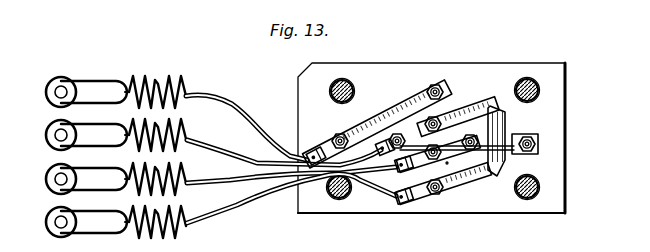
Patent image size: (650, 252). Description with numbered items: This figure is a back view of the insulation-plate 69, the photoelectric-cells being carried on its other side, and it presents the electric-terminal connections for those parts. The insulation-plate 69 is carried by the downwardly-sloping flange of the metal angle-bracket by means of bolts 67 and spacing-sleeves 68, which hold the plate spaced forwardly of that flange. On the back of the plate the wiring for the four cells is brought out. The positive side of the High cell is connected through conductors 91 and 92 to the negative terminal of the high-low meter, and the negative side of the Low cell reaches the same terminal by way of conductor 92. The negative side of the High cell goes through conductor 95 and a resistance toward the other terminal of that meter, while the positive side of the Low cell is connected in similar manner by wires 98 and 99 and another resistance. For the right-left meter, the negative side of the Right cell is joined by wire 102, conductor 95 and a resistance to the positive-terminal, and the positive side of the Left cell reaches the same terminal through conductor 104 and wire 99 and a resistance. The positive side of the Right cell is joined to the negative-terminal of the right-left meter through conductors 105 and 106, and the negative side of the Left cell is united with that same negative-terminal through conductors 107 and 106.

The bolts 67 is at (330, 91).
The spacing-sleeves 68 is at (350, 84).
The insulation-plate 69 is at (553, 128).
The conductor 91 is at (400, 104).
The conductor 92 is at (228, 208).
The conductor 95 is at (199, 95).
The wire 98 is at (447, 164).
The wire 99 is at (240, 181).
The wire 102 is at (361, 119).
The conductor 104 is at (455, 166).
The conductor 105 is at (492, 172).
The conductor 106 is at (226, 148).
The conductor 107 is at (506, 152).